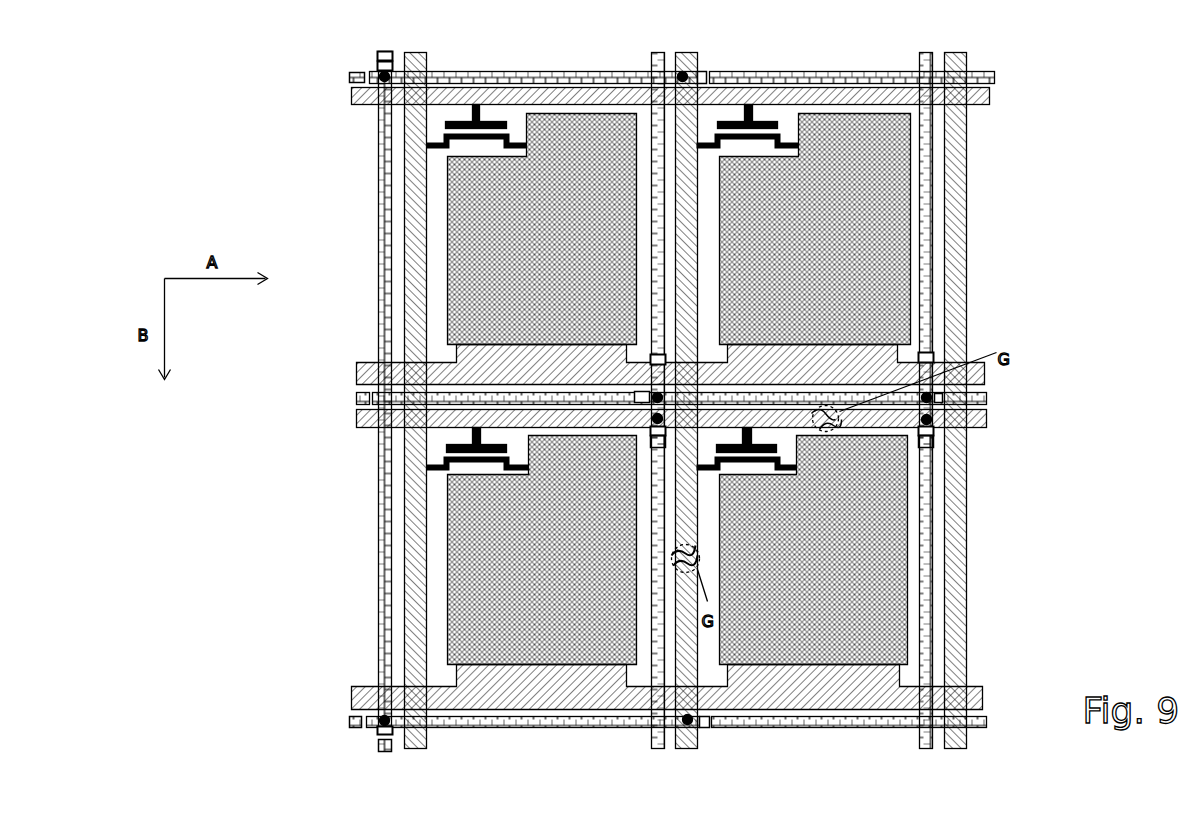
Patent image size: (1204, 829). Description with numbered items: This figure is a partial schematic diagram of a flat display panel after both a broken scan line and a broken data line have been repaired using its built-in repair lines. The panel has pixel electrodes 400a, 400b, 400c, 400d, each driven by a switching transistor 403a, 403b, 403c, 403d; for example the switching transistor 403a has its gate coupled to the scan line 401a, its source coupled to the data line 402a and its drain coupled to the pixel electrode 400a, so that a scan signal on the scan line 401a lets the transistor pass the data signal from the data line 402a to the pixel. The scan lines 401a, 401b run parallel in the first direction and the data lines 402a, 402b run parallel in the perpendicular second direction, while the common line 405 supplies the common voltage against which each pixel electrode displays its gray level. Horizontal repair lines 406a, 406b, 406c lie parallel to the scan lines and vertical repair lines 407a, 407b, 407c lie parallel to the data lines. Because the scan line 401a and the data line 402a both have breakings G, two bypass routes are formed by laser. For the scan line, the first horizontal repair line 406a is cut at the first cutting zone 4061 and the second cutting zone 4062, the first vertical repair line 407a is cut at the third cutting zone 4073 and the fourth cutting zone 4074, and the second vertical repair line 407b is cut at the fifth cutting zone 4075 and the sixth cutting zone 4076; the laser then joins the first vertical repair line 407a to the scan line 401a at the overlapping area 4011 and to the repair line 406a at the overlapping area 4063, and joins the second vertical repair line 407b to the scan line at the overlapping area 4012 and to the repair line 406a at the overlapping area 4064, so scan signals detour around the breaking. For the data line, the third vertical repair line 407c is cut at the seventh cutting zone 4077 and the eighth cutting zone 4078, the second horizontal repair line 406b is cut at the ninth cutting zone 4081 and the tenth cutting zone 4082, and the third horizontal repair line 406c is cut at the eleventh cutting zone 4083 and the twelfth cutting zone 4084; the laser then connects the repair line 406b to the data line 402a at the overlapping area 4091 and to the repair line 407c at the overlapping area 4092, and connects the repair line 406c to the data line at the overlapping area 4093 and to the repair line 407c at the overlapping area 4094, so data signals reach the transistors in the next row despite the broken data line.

The pixel electrode 400a is at (835, 612).
The pixel electrode 400b is at (468, 593).
The pixel electrode 400c is at (835, 290).
The pixel electrode 400d is at (468, 200).
The scan line 401a is at (357, 428).
The scan line 401b is at (352, 100).
The data line 402a is at (697, 750).
The data line 402b is at (427, 55).
The switching transistor 403a is at (800, 468).
The switching transistor 403b is at (447, 470).
The switching transistor 403c is at (800, 143).
The switching transistor 403d is at (440, 150).
The common line 405 is at (357, 371).
The first horizontal repair line 406a is at (357, 398).
The second horizontal repair line 406b is at (985, 722).
The third horizontal repair line 406c is at (995, 77).
The first vertical repair line 407a is at (655, 748).
The second vertical repair line 407b is at (925, 748).
The third vertical repair line 407c is at (383, 750).
The overlapping area 4011 is at (655, 425).
The overlapping area 4012 is at (930, 422).
The first cutting zone 4061 is at (640, 400).
The second cutting zone 4062 is at (945, 403).
The overlapping area 4063 is at (635, 396).
The overlapping area 4064 is at (942, 397).
The third cutting zone 4073 is at (655, 357).
The fourth cutting zone 4074 is at (655, 434).
The fifth cutting zone 4075 is at (930, 350).
The sixth cutting zone 4076 is at (928, 447).
The seventh cutting zone 4077 is at (387, 63).
The eighth cutting zone 4078 is at (413, 737).
The ninth cutting zone 4081 is at (349, 718).
The tenth cutting zone 4082 is at (712, 724).
The eleventh cutting zone 4083 is at (350, 74).
The twelfth cutting zone 4084 is at (710, 76).
The overlapping area 4091 is at (688, 723).
The overlapping area 4092 is at (380, 724).
The overlapping area 4093 is at (683, 75).
The overlapping area 4094 is at (387, 74).